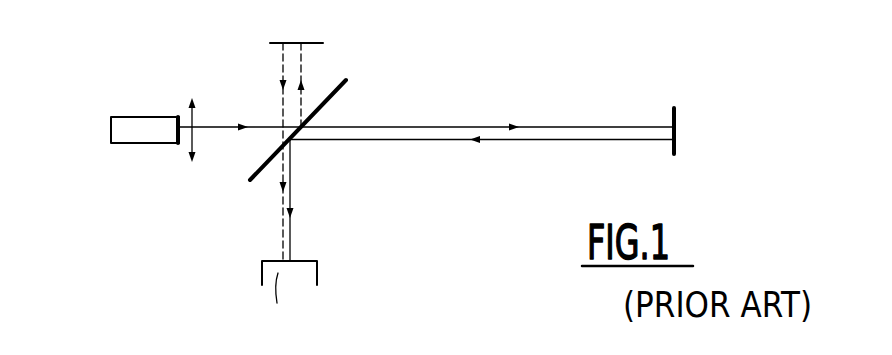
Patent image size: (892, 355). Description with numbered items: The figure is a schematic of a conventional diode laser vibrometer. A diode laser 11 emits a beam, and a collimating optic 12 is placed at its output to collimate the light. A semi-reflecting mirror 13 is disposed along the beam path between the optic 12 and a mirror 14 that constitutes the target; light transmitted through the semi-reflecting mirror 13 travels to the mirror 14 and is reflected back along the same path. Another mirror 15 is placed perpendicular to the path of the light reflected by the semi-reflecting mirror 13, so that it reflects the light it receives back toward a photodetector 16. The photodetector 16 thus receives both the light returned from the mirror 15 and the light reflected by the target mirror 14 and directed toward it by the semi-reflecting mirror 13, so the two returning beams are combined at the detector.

The diode laser 11 is at (137, 158).
The collimating optic 12 is at (197, 118).
The semi-reflecting mirror 13 is at (330, 90).
The mirror 14 is at (676, 137).
The mirror 15 is at (307, 42).
The photodetector 16 is at (307, 273).